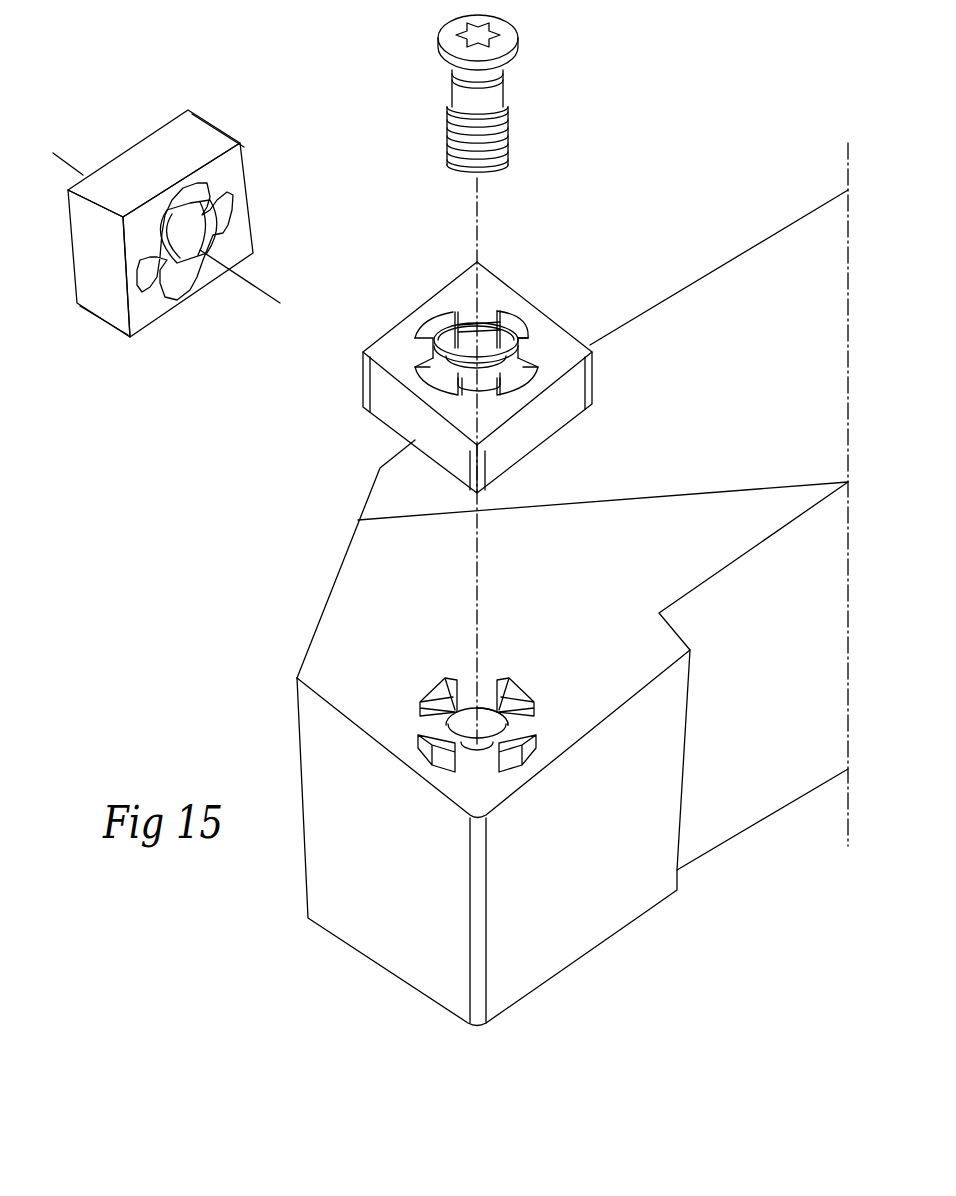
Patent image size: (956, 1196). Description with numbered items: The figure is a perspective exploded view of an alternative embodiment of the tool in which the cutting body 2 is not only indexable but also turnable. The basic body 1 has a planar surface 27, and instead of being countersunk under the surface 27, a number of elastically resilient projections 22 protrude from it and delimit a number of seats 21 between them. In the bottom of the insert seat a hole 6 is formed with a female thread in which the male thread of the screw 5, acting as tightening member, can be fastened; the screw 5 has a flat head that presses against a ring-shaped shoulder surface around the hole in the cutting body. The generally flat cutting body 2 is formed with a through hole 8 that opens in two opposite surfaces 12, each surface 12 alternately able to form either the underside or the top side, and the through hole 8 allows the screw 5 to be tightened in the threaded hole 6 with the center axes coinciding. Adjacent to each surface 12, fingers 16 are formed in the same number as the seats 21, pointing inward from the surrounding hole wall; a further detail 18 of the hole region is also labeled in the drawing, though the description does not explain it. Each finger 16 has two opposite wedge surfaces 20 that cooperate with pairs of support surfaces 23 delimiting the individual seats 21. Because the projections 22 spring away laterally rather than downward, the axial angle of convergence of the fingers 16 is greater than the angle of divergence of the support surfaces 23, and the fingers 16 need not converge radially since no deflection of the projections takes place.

The basic body 1 is at (567, 584).
The cutting body 2 is at (322, 260).
The tightening member 5 is at (514, 57).
The hole 6 is at (485, 745).
The through hole 8 is at (487, 382).
The surface 12 is at (153, 236).
The fingers 16 is at (532, 335).
The recess of insert hole 18 is at (532, 356).
The wedge surfaces 20 is at (432, 374).
The seats 21 is at (535, 728).
The projections 22 is at (530, 692).
The support surfaces 23 is at (425, 710).
The planar surface 27 is at (450, 630).